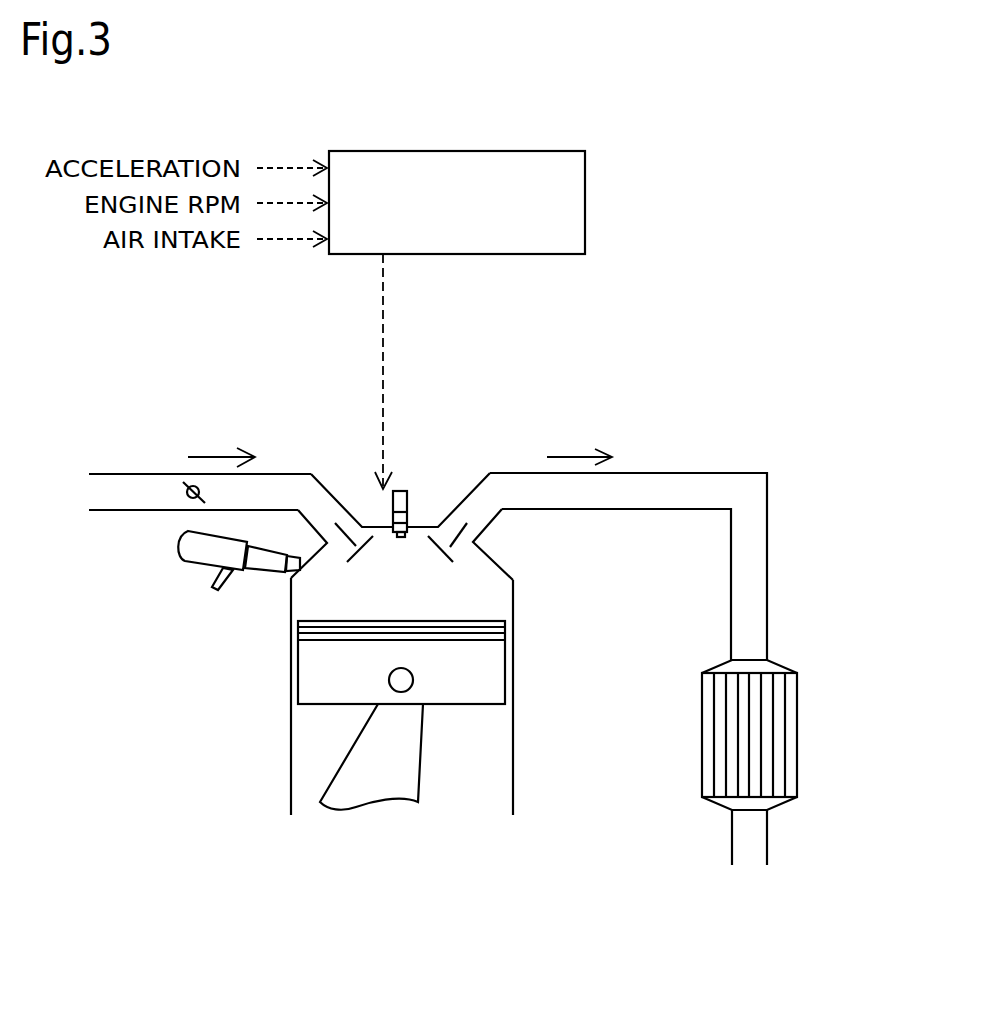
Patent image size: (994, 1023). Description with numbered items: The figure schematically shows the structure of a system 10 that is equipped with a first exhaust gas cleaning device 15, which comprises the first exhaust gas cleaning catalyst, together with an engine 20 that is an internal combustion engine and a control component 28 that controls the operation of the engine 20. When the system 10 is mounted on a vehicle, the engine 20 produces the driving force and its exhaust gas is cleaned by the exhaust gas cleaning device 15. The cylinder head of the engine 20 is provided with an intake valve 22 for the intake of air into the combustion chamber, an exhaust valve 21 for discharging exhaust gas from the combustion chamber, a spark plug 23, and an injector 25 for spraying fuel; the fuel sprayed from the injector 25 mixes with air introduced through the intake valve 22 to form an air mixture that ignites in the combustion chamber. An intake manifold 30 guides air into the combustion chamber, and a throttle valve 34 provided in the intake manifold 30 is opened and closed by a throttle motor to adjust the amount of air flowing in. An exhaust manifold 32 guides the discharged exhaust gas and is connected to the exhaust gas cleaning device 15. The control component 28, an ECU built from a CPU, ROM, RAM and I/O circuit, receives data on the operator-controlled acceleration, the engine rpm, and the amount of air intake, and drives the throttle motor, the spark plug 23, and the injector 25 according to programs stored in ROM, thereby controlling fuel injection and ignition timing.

The system 10 is at (699, 132).
The control component 28 is at (585, 212).
The intake manifold 30 is at (128, 472).
The exhaust manifold 32 is at (670, 472).
The throttle valve 34 is at (189, 497).
The injector 25 is at (199, 565).
The intake valve 22 is at (356, 522).
The spark plug 23 is at (400, 490).
The exhaust valve 21 is at (446, 522).
The engine 20 is at (513, 645).
The exhaust gas cleaning device 15 is at (797, 738).